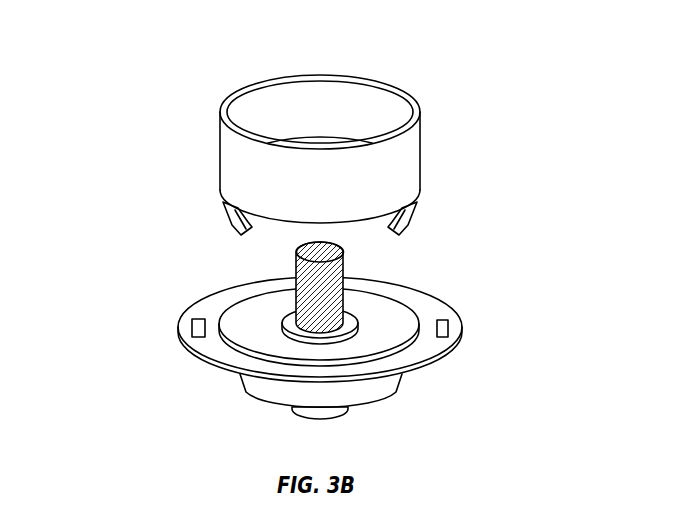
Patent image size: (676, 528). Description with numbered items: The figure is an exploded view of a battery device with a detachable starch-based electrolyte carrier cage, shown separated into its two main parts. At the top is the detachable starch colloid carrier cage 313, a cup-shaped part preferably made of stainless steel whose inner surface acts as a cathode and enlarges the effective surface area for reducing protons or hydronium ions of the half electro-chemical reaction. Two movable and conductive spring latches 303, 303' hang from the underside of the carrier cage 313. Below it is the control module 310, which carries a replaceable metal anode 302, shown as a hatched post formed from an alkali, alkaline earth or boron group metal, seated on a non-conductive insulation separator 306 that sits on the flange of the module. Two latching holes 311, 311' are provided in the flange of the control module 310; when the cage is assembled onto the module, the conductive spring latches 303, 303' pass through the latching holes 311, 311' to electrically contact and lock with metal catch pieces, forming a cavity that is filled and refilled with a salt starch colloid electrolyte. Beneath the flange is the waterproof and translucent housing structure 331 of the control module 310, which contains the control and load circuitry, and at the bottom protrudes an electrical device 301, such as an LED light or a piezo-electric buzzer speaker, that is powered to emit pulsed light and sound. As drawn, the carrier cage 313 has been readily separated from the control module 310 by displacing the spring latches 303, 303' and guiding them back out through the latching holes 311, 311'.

The detachable starch colloid carrier cage 313 is at (465, 133).
The conductive spring latch 303 is at (429, 212).
The conductive spring latch 303' is at (207, 212).
The replaceable metal anode 302 is at (336, 270).
The non-conductive insulation separator 306 is at (386, 314).
The latching hole 311 is at (470, 320).
The latching hole 311' is at (169, 321).
The control module 310 is at (168, 389).
The waterproof and translucent housing structure 331 is at (377, 390).
The electrical device 301 is at (318, 419).